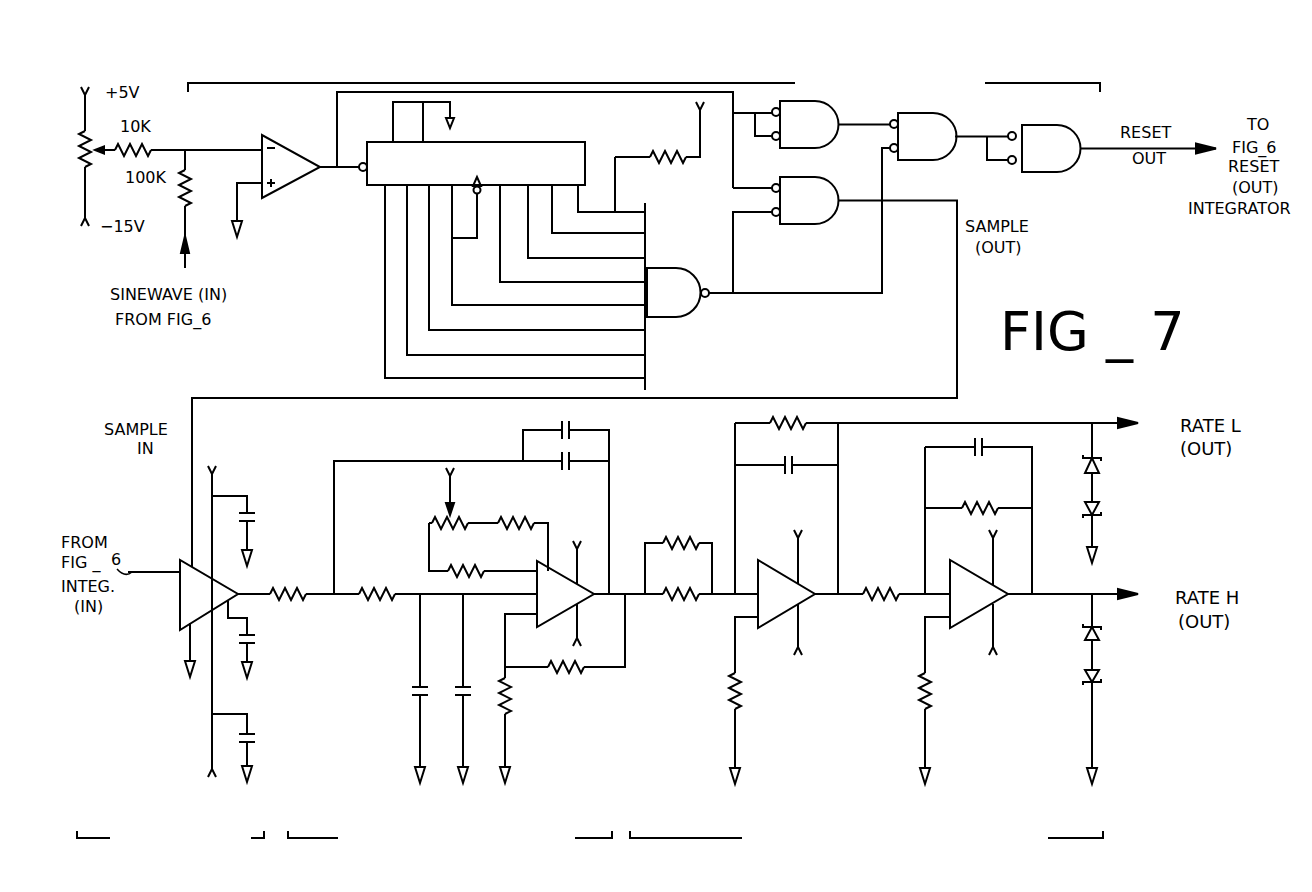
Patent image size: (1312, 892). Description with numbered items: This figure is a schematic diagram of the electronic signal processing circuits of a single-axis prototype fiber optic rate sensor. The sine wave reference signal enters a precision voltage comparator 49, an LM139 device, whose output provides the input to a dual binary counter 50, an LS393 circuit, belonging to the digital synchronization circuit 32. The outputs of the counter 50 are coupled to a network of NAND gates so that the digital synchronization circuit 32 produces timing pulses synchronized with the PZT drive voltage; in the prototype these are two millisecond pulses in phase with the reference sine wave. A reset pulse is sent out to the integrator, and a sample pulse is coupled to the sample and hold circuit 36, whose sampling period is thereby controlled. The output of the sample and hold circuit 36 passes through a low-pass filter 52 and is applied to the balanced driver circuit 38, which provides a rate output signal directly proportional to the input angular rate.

The digital synchronization circuit 32 is at (648, 232).
The sample and hold circuit 36 is at (205, 655).
The balanced driver circuit 38 is at (881, 626).
The precision voltage comparator 49 is at (297, 182).
The dual binary counter 50 is at (484, 141).
The low-pass filter 52 is at (458, 635).